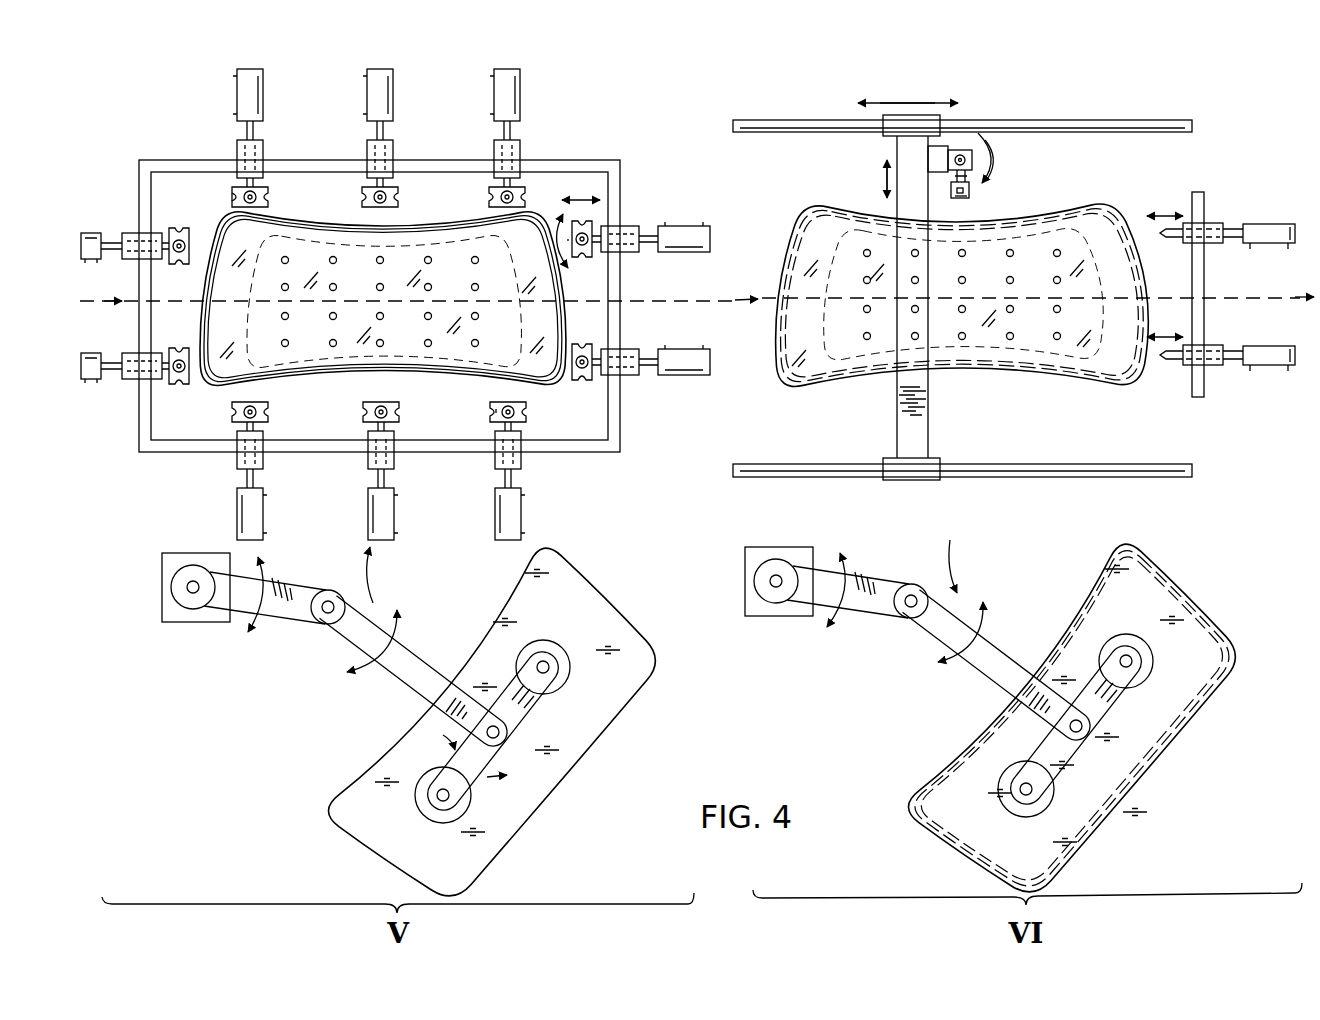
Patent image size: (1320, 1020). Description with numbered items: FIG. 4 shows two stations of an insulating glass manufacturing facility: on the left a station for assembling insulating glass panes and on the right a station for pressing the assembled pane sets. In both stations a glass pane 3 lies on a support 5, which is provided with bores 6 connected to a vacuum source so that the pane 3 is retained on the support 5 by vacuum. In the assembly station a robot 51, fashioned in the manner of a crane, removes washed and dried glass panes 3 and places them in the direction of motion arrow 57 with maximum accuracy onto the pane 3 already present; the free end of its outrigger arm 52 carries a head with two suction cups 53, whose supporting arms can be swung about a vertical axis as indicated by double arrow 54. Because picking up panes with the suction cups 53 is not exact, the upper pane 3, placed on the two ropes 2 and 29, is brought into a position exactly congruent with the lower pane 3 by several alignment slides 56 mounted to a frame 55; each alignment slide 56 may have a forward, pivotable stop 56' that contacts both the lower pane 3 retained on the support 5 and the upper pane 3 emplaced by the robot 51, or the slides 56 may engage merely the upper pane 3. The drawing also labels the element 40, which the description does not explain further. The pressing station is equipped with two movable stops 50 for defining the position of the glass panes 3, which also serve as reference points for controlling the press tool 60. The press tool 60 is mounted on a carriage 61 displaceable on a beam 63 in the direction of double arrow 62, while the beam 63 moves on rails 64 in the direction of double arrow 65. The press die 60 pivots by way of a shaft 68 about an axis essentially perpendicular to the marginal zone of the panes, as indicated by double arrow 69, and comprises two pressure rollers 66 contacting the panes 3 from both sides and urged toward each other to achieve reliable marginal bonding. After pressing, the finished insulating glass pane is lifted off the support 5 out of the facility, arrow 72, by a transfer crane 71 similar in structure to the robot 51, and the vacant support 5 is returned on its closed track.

The rope 2 is at (228, 392).
The glass pane 3 is at (537, 372).
The support 5 is at (420, 367).
The bores 6 is at (288, 352).
The rope 29 is at (206, 388).
The glass sheet 40 is at (453, 216).
The movable stops 50 is at (1167, 237).
The robot 51 is at (268, 647).
The outrigger arm 52 is at (408, 673).
The suction cups 53 is at (568, 672).
The double arrow 54 is at (456, 756).
The frame 55 is at (157, 452).
The alignment slides 56 is at (395, 304).
The pivotable stop 56' is at (391, 306).
The direction of motion arrow 57 is at (380, 583).
The press tool 60 is at (973, 193).
The carriage 61 is at (937, 158).
The double arrow 62 is at (883, 178).
The beam 63 is at (918, 440).
The rails 64 is at (762, 120).
The double arrow 65 is at (890, 98).
The pressure rollers 66 is at (961, 199).
The shaft 68 is at (961, 156).
The double arrow 69 is at (992, 158).
The transfer crane 71 is at (873, 653).
The arrow 72 is at (957, 555).